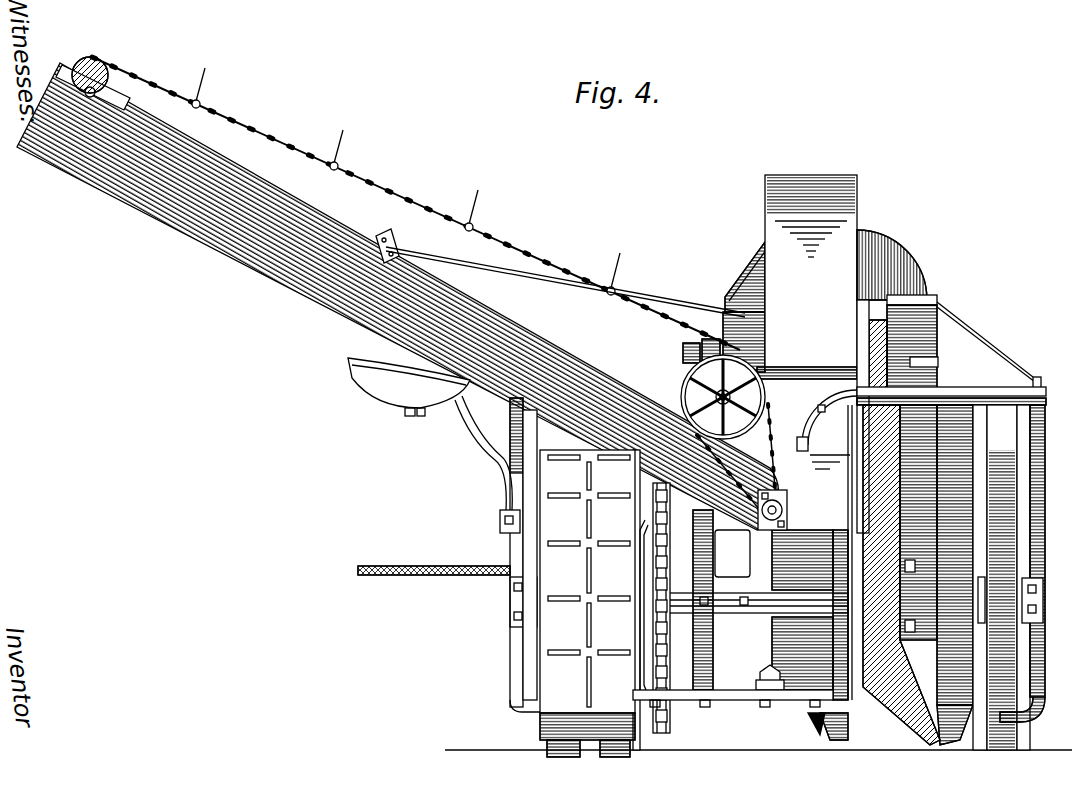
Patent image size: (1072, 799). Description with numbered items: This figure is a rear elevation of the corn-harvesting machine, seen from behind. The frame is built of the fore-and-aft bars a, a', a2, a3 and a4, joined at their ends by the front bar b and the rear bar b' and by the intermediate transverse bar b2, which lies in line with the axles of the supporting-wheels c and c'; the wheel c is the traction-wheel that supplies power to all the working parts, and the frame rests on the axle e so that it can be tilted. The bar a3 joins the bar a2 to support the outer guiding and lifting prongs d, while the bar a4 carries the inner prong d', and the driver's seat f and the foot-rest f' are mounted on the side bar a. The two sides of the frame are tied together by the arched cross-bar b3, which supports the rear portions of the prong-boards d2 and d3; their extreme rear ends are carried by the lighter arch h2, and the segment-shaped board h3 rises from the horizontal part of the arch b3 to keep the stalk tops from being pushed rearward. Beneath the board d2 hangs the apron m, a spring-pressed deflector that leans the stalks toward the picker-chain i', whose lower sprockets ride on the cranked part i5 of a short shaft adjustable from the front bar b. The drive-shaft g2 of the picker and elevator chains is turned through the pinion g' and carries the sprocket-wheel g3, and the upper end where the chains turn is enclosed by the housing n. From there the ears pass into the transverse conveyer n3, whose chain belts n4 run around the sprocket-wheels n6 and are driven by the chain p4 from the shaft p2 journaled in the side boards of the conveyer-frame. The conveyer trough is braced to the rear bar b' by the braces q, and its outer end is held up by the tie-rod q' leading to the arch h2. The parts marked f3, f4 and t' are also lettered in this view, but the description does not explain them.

The transverse conveyer n3 is at (264, 261).
The sprocket-wheels n6 is at (108, 70).
The chain belts n4 is at (416, 203).
The tie-rod q' is at (565, 278).
The pinion g' is at (705, 337).
The prong-board d3 is at (733, 292).
The housing n is at (765, 213).
The sprocket-wheel g3 is at (770, 378).
The drive-shaft g2 is at (682, 353).
The segment-shaped board h3 is at (880, 258).
The apron m is at (858, 342).
The arch h2 is at (985, 347).
The prong-board d2 is at (965, 363).
The outer guiding and lifting prongs d is at (919, 575).
The fore-and-aft bar a2 is at (906, 742).
The supporting-wheel c' is at (987, 577).
The rear transverse bar b' is at (791, 565).
The fore-and-aft bar a3 is at (1036, 535).
The axle e is at (510, 600).
The intermediate transverse bar b2 is at (760, 616).
The traction-wheel c is at (587, 603).
The elevator chain f3 is at (652, 510).
The chain guide f4 is at (652, 610).
The fore-and-aft bar a is at (504, 555).
The foot-rest f' is at (434, 590).
The driver's seat f is at (429, 445).
The fore-and-aft bar a' is at (716, 600).
The arched cross-bar b3 is at (756, 549).
The partition t' is at (802, 544).
The picker and conveyer chain i' is at (796, 653).
The cranked part of shaft i5 is at (812, 682).
The intermediate fore-and-aft bar a4 is at (845, 730).
The inner guiding and lifting prong d' is at (800, 734).
The front transverse bar b is at (662, 722).
The braces q is at (827, 443).
The chain p4 is at (714, 458).
The shaft p2 is at (758, 501).